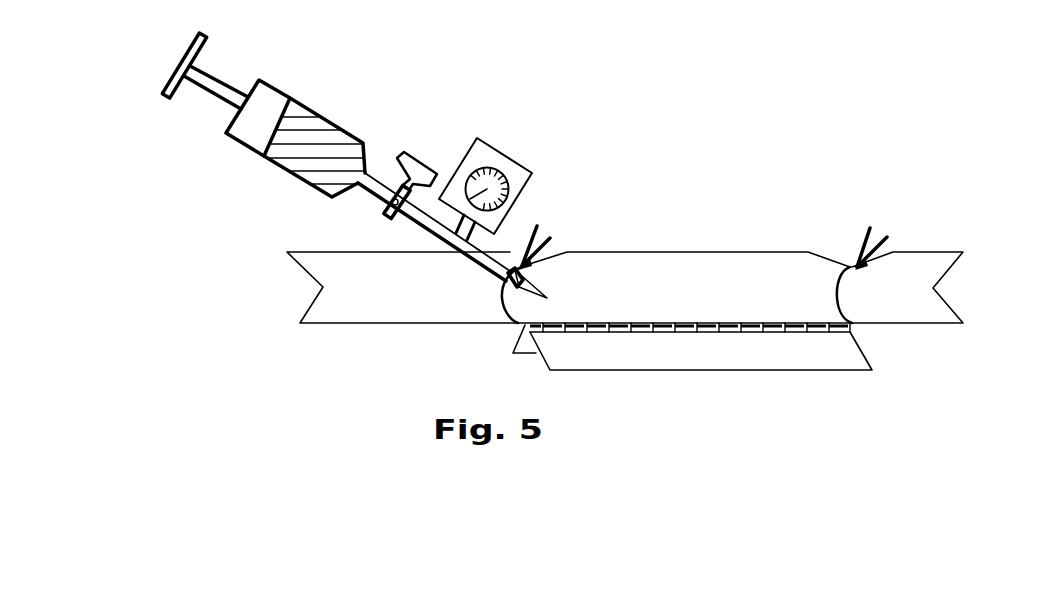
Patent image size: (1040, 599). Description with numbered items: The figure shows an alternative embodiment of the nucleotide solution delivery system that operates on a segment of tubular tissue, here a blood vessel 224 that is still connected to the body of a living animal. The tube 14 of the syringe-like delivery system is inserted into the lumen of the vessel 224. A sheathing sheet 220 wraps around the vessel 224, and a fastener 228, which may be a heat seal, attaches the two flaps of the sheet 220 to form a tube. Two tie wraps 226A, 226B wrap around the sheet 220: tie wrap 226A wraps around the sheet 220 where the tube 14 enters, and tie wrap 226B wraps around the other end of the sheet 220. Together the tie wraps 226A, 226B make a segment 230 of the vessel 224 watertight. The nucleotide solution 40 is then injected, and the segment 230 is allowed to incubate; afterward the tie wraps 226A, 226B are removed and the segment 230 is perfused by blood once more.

The nucleotide solution 40 is at (320, 145).
The tube 14 is at (435, 200).
The vessel 224 is at (325, 311).
The segment 230 is at (692, 272).
The tie wrap 226A is at (550, 238).
The tie wrap 226B is at (887, 237).
The fastener 228 is at (660, 330).
The sheathing sheet 220 is at (763, 358).